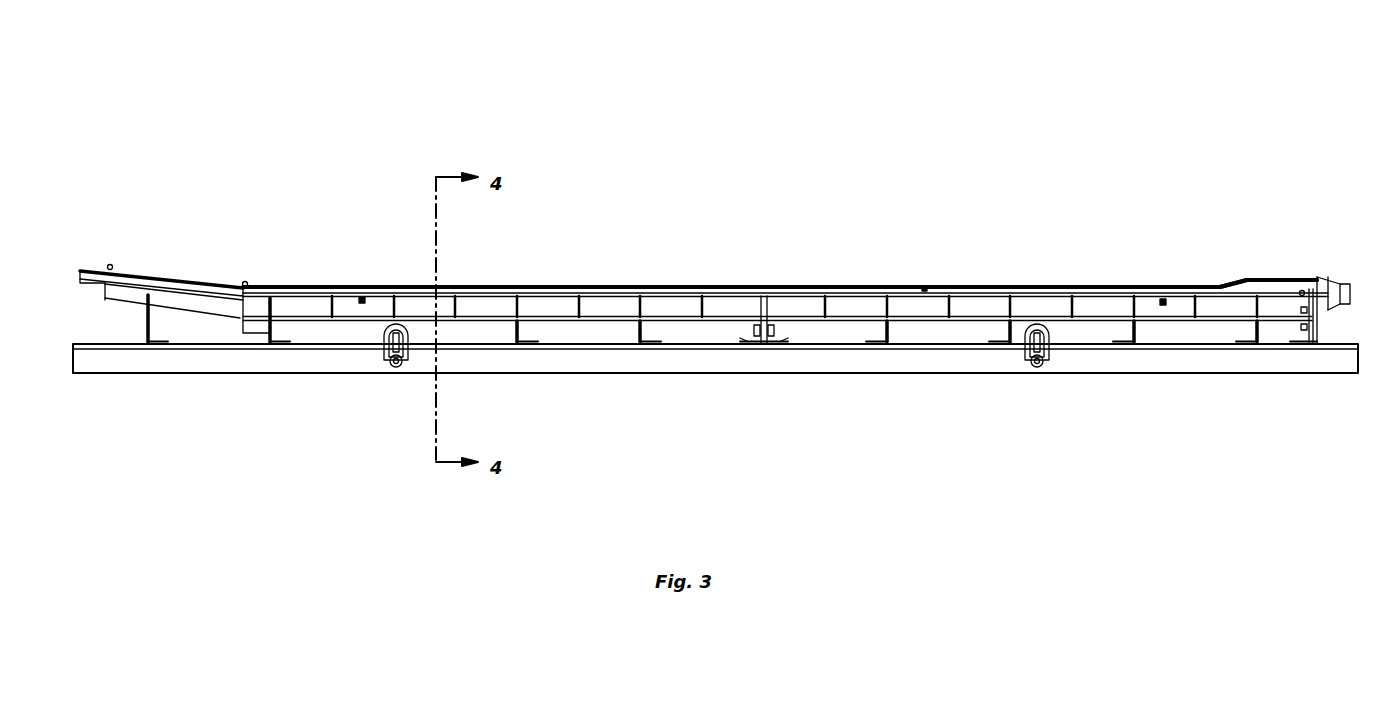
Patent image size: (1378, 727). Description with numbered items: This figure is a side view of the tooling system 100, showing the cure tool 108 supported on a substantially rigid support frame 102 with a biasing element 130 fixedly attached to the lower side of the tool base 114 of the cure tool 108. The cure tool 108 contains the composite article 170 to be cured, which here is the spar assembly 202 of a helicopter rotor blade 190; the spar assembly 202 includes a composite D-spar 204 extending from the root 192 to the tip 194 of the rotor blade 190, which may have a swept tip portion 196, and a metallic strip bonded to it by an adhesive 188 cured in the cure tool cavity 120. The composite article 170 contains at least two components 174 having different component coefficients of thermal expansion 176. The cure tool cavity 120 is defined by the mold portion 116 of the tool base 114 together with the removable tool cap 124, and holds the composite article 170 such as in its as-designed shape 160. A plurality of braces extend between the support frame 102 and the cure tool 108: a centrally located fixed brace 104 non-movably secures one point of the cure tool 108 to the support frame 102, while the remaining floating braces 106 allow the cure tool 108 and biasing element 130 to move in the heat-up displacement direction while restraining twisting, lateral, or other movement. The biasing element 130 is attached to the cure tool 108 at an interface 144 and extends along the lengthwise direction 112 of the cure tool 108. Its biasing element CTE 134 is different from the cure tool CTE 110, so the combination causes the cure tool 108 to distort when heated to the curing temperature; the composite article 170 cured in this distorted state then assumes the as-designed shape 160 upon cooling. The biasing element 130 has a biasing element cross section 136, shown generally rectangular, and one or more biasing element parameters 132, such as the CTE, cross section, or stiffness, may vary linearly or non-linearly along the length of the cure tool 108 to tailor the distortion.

The tooling system 100 is at (1049, 87).
The support frame 102 is at (340, 352).
The fixed brace 104 is at (775, 330).
The floating braces 106 is at (269, 342).
The cure tool 108 is at (722, 306).
The cure tool CTE 110 is at (664, 306).
The lengthwise direction 112 is at (500, 251).
The tool base 114 is at (920, 308).
The mold portion 116 is at (975, 304).
The cure tool cavity 120 is at (958, 285).
The tool cap 124 is at (905, 285).
The biasing element 130 is at (1167, 328).
The biasing element parameter 132 is at (1208, 328).
The biasing element CTE 134 is at (1275, 328).
The biasing element cross section 136 is at (823, 322).
The interface 144 is at (240, 318).
The as-designed shape 160 is at (668, 285).
The composite article 170 is at (730, 285).
The components 174 is at (1098, 285).
The component coefficients of thermal expansion 176 is at (1152, 285).
The adhesive 188 is at (792, 285).
The rotor blade 190 is at (292, 286).
The root 192 is at (1312, 278).
The tip 194 is at (80, 268).
The swept tip portion 196 is at (147, 270).
The spar assembly 202 is at (1220, 287).
The composite D-spar 204 is at (1273, 280).